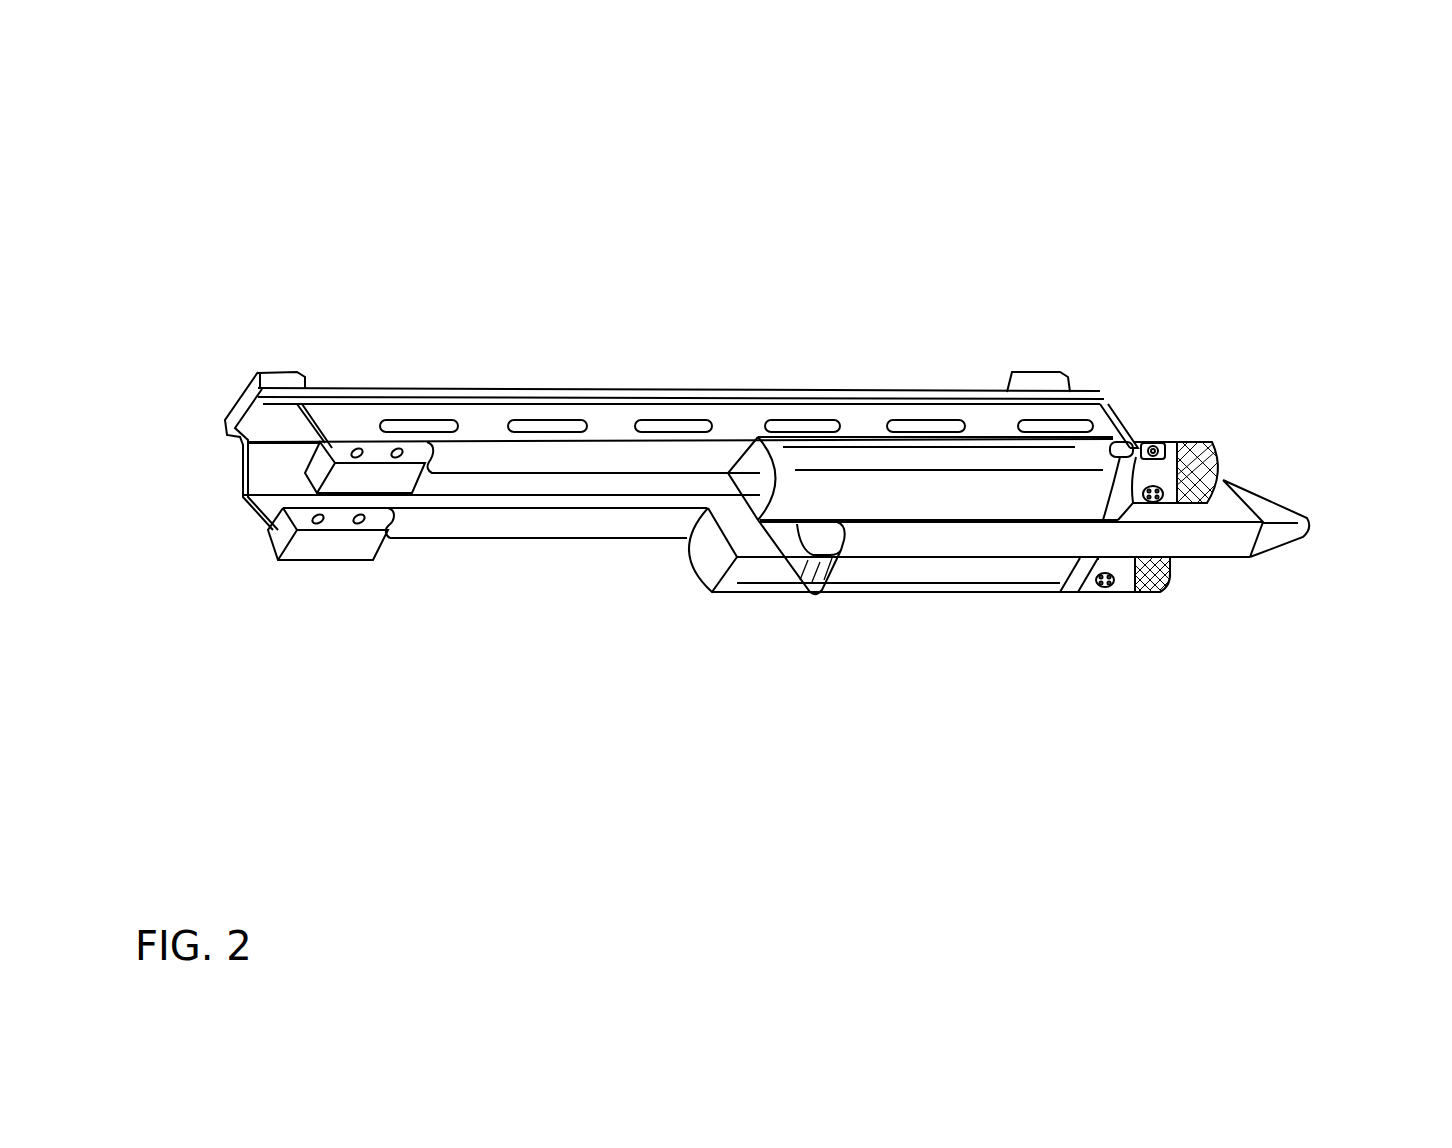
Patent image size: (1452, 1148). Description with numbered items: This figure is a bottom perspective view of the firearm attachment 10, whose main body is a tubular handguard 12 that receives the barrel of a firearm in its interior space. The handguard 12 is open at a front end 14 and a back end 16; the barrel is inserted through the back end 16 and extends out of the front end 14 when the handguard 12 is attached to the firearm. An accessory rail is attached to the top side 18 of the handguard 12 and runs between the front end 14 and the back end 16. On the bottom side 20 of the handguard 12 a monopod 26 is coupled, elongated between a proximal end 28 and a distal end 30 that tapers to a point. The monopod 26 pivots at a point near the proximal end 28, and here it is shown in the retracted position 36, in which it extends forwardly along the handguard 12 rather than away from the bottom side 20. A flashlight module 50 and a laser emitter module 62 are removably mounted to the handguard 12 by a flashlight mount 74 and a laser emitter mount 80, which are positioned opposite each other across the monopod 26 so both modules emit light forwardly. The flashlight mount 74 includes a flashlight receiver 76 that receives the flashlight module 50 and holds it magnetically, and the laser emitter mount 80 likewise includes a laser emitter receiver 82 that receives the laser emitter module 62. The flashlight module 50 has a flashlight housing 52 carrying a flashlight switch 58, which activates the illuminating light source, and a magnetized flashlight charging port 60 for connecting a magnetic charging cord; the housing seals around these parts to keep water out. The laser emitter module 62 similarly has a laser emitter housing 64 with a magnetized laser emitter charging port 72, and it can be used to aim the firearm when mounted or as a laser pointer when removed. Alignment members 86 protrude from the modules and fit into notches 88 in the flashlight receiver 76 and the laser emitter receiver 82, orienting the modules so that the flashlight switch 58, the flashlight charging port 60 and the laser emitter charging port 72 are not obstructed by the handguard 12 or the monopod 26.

The firearm attachment 10 is at (985, 150).
The handguard 12 is at (480, 418).
The front end 14 is at (1120, 410).
The back end 16 is at (240, 495).
The top side 18 is at (327, 388).
The bottom side 20 is at (483, 528).
The monopod 26 is at (1230, 550).
The proximal end 28 is at (787, 561).
The distal end 30 is at (1280, 535).
The retracted position 36 is at (1290, 463).
The flashlight module 50 is at (1195, 401).
The flashlight housing 52 is at (1210, 442).
The flashlight switch 58 is at (1155, 442).
The flashlight charging port 60 is at (1155, 502).
The laser emitter module 62 is at (1122, 617).
The laser emitter housing 64 is at (1148, 594).
The laser emitter charging port 72 is at (1103, 592).
The flashlight mount 74 is at (735, 420).
The flashlight receiver 76 is at (862, 458).
The laser emitter mount 80 is at (700, 626).
The laser emitter receiver 82 is at (707, 557).
The alignment members 86 is at (1112, 442).
The notches 88 is at (1094, 450).